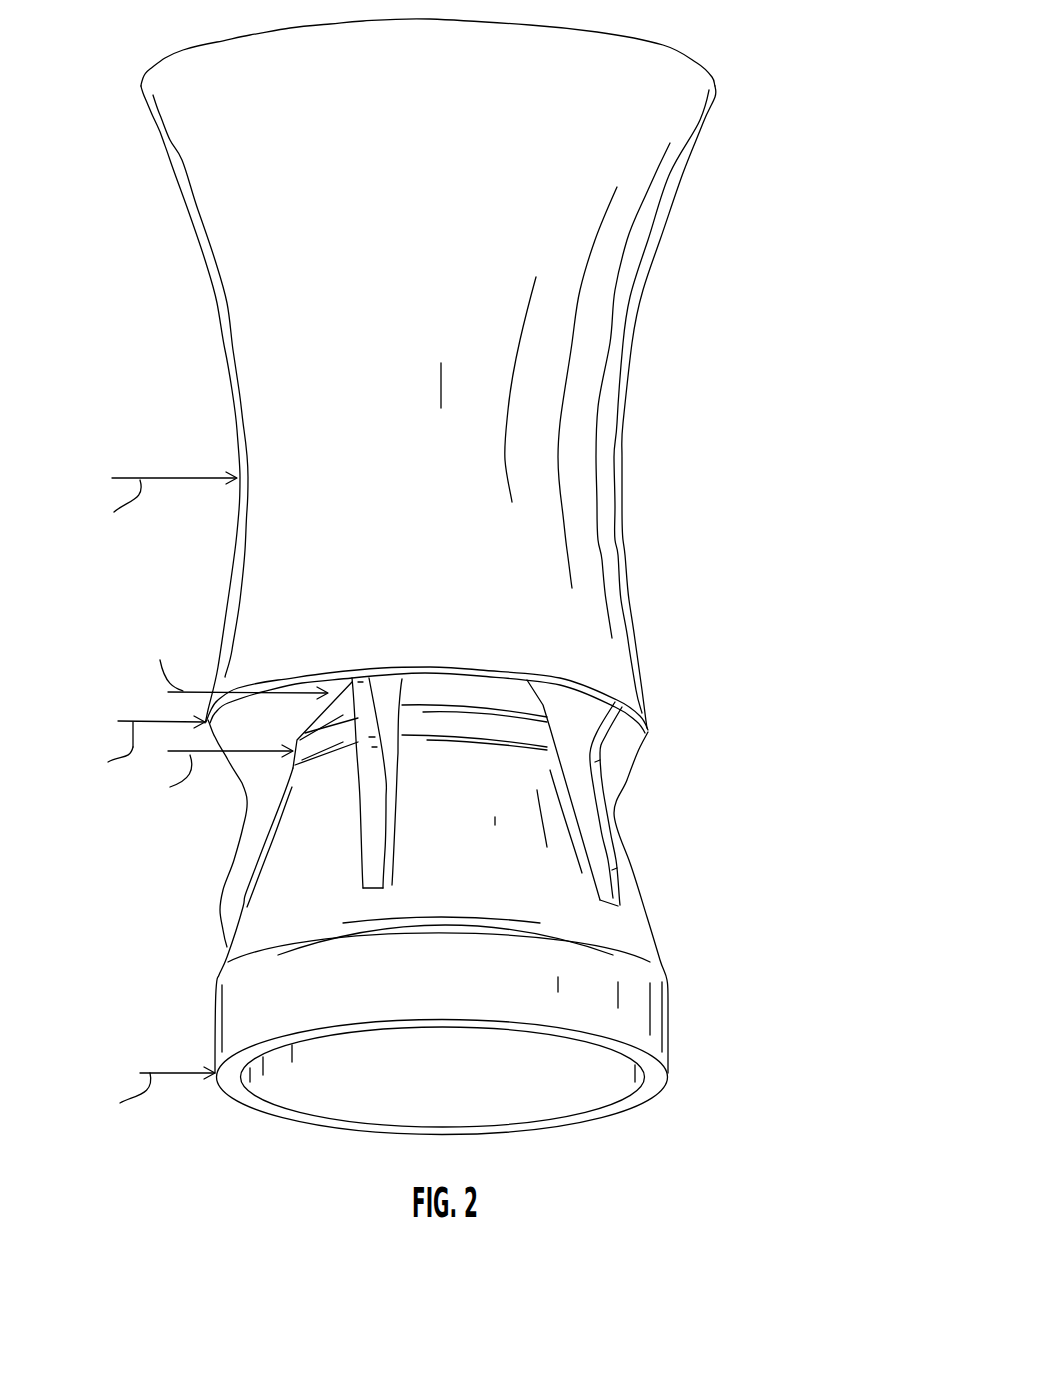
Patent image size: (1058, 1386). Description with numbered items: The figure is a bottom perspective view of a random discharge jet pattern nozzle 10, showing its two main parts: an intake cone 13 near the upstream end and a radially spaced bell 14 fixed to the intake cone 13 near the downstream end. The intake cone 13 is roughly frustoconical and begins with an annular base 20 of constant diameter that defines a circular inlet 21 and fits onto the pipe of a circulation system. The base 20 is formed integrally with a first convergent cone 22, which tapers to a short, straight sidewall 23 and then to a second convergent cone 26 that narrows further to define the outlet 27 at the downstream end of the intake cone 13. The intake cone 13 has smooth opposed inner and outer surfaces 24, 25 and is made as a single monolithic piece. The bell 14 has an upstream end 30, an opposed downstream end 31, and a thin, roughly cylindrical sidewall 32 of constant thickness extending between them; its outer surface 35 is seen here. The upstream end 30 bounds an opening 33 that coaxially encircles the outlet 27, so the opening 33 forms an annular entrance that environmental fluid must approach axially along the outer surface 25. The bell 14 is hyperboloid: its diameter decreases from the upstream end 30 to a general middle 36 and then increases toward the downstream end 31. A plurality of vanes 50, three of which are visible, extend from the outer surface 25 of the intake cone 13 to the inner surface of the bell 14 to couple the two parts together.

The random discharge jet pattern nozzle 10 is at (812, 117).
The intake cone 13 is at (214, 958).
The bell 14 is at (435, 373).
The annular base 20 is at (655, 1012).
The inlet 21 is at (637, 1105).
The first convergent cone 22 is at (638, 902).
The sidewall 23 is at (503, 728).
The inner surface 24 is at (447, 1119).
The outer surface 25 is at (460, 1004).
The second convergent cone 26 is at (488, 693).
The outlet 27 is at (477, 683).
The upstream end 30 is at (648, 734).
The downstream end 31 is at (713, 78).
The sidewall 32 is at (628, 340).
The opening 33 is at (415, 690).
The outer surface 35 is at (600, 136).
The middle 36 is at (617, 469).
The vanes 50 is at (242, 828).